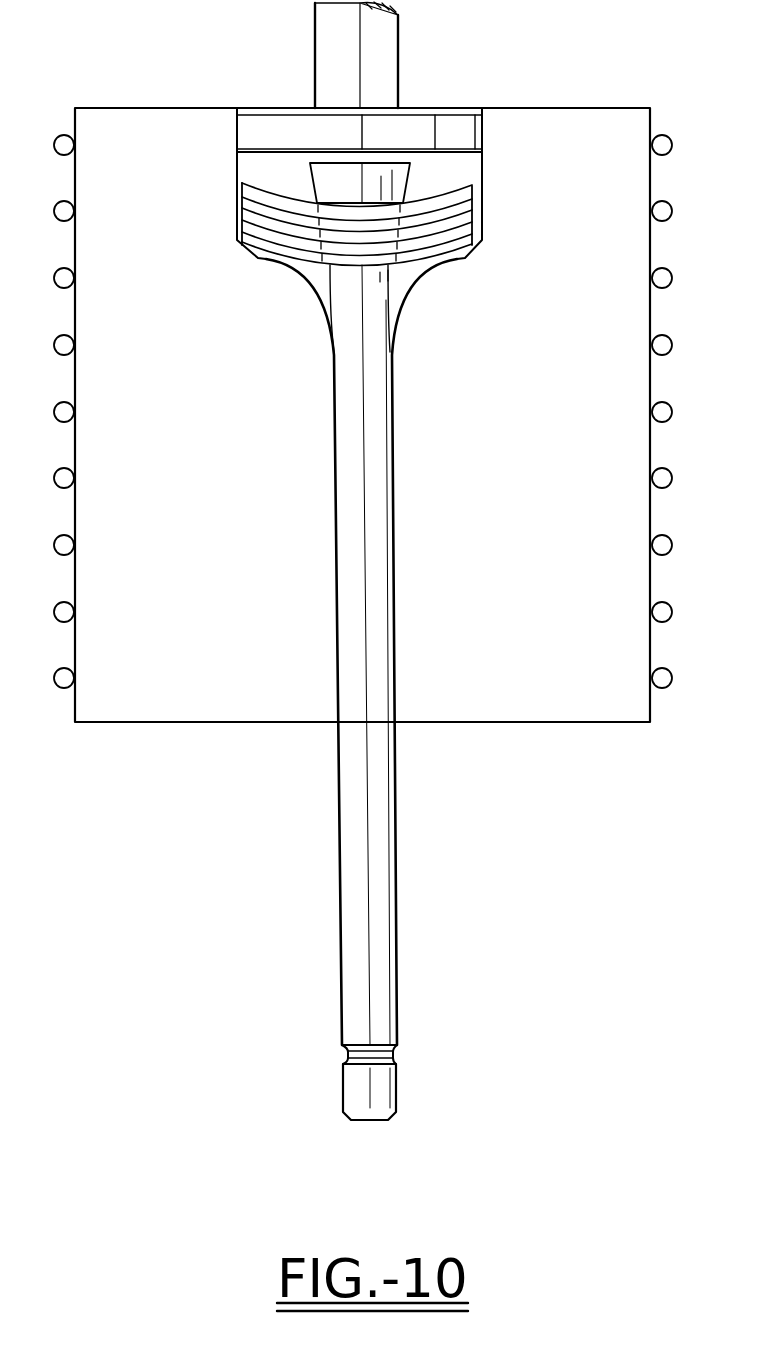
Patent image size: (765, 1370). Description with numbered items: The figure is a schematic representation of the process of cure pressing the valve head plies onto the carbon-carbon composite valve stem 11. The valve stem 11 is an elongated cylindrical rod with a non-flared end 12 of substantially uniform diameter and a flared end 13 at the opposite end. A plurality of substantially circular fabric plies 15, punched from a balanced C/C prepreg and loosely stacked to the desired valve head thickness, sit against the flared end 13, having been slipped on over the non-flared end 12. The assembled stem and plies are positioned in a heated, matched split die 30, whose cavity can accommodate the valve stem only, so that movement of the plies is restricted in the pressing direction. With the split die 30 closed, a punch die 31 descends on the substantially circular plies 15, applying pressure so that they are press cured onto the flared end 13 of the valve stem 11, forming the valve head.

The valve stem 11 is at (348, 478).
The non-flared end 12 is at (350, 1083).
The flared end 13 is at (314, 173).
The substantially circular fabric plies 15 is at (258, 247).
The matched split die 30 is at (506, 717).
The punch die 31 is at (442, 122).